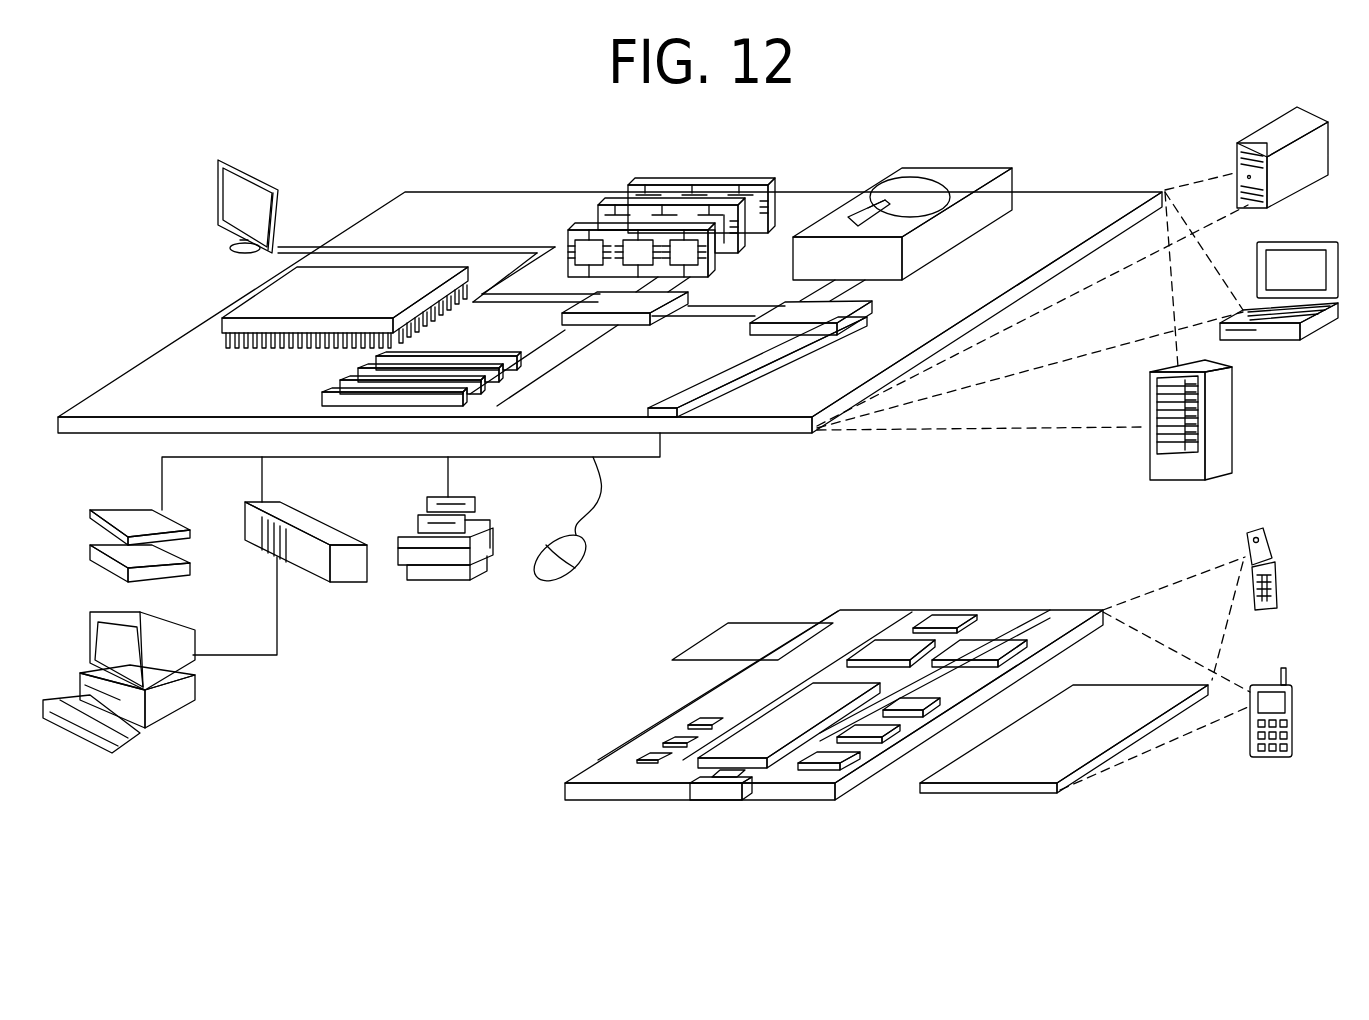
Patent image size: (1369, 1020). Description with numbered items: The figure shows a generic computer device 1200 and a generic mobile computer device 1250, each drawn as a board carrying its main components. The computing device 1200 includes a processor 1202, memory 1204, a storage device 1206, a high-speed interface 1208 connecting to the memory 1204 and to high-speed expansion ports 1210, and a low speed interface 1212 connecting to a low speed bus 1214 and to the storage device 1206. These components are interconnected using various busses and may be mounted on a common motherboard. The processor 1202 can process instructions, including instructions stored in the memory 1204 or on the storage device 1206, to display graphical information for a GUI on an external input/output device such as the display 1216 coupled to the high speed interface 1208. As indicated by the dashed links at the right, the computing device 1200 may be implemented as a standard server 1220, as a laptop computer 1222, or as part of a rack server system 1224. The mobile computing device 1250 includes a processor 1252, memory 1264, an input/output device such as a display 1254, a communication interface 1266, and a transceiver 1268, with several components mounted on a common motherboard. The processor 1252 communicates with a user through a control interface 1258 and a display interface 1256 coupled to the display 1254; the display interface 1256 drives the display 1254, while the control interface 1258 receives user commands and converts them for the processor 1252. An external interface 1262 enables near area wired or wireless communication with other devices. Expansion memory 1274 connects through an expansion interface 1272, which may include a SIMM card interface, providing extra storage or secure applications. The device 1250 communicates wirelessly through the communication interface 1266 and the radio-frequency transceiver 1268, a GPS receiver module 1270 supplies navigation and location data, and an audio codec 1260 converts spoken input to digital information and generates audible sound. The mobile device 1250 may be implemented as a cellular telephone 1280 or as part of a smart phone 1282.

The generic computer device 1200 is at (351, 132).
The processor 1202 is at (246, 298).
The memory 1204 is at (706, 185).
The storage device 1206 is at (945, 168).
The high-speed interface 1208 is at (637, 303).
The high-speed expansion ports 1210 is at (349, 379).
The low speed interface 1212 is at (786, 307).
The low speed bus 1214 is at (668, 404).
The display 1216 is at (221, 160).
The standard server 1220 is at (1257, 137).
The laptop computer 1222 is at (1316, 242).
The rack server system 1224 is at (1205, 420).
The generic mobile computer device 1250 is at (514, 818).
The processor 1252 is at (757, 735).
The display 1254 is at (1105, 702).
The display interface 1256 is at (840, 760).
The control interface 1258 is at (878, 731).
The audio codec 1260 is at (915, 701).
The external interface 1262 is at (718, 787).
The memory 1264 is at (668, 736).
The communication interface 1266 is at (893, 646).
The transceiver 1268 is at (987, 646).
The GPS receiver module 1270 is at (944, 620).
The expansion interface 1272 is at (819, 623).
The expansion memory 1274 is at (733, 624).
The cellular telephone 1280 is at (1255, 530).
The smart phone 1282 is at (1268, 688).